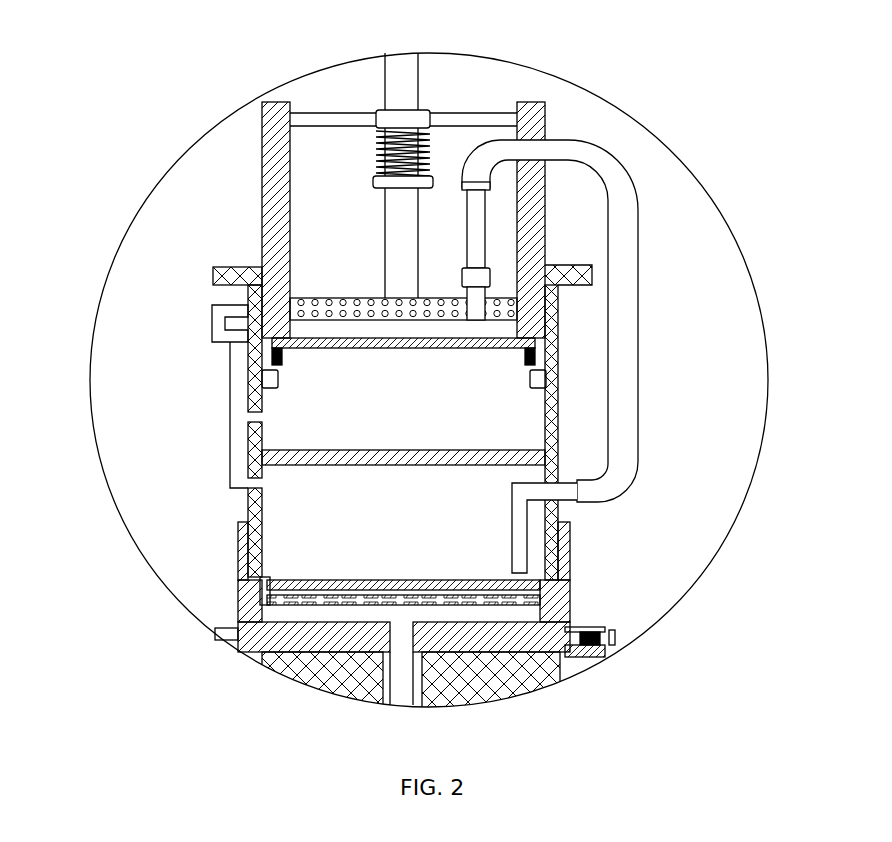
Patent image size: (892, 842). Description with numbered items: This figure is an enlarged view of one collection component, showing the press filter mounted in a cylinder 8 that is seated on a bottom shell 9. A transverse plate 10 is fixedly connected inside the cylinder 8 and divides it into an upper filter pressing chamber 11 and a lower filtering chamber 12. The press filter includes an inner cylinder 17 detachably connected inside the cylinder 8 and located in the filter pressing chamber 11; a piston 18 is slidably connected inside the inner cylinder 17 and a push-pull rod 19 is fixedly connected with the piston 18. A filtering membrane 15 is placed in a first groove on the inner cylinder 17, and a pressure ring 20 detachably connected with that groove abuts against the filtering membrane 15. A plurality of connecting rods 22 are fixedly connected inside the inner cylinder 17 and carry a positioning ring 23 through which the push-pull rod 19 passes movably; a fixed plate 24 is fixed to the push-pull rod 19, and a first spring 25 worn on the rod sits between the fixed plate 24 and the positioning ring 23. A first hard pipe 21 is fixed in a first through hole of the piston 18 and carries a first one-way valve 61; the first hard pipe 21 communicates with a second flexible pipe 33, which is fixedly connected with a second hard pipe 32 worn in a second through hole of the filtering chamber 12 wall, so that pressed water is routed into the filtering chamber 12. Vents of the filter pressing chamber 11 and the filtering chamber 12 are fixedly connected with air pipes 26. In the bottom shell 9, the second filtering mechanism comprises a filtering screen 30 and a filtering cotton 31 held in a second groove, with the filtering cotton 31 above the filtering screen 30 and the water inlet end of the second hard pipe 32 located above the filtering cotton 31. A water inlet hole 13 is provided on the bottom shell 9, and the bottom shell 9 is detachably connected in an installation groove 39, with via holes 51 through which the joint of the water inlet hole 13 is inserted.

The cylinder 8 is at (547, 400).
The bottom shell 9 is at (572, 553).
The transverse plate 10 is at (300, 472).
The filter pressing chamber 11 is at (325, 407).
The filtering chamber 12 is at (355, 518).
The water inlet hole 13 is at (540, 683).
The filtering membrane 15 is at (325, 345).
The inner cylinder 17 is at (273, 240).
The piston 18 is at (328, 310).
The push-pull rod 19 is at (395, 88).
The pressure ring 20 is at (545, 360).
The first hard pipe 21 is at (477, 223).
The connecting rods 22 is at (473, 115).
The positioning ring 23 is at (382, 117).
The fixed plate 24 is at (373, 180).
The first spring 25 is at (380, 157).
The air pipes 26 is at (231, 422).
The filtering screen 30 is at (350, 596).
The filtering cotton 31 is at (305, 600).
The second hard pipe 32 is at (572, 528).
The second flexible pipe 33 is at (622, 250).
The installation groove 39 is at (607, 660).
The via holes 51 is at (410, 690).
The first one-way valve 61 is at (487, 276).